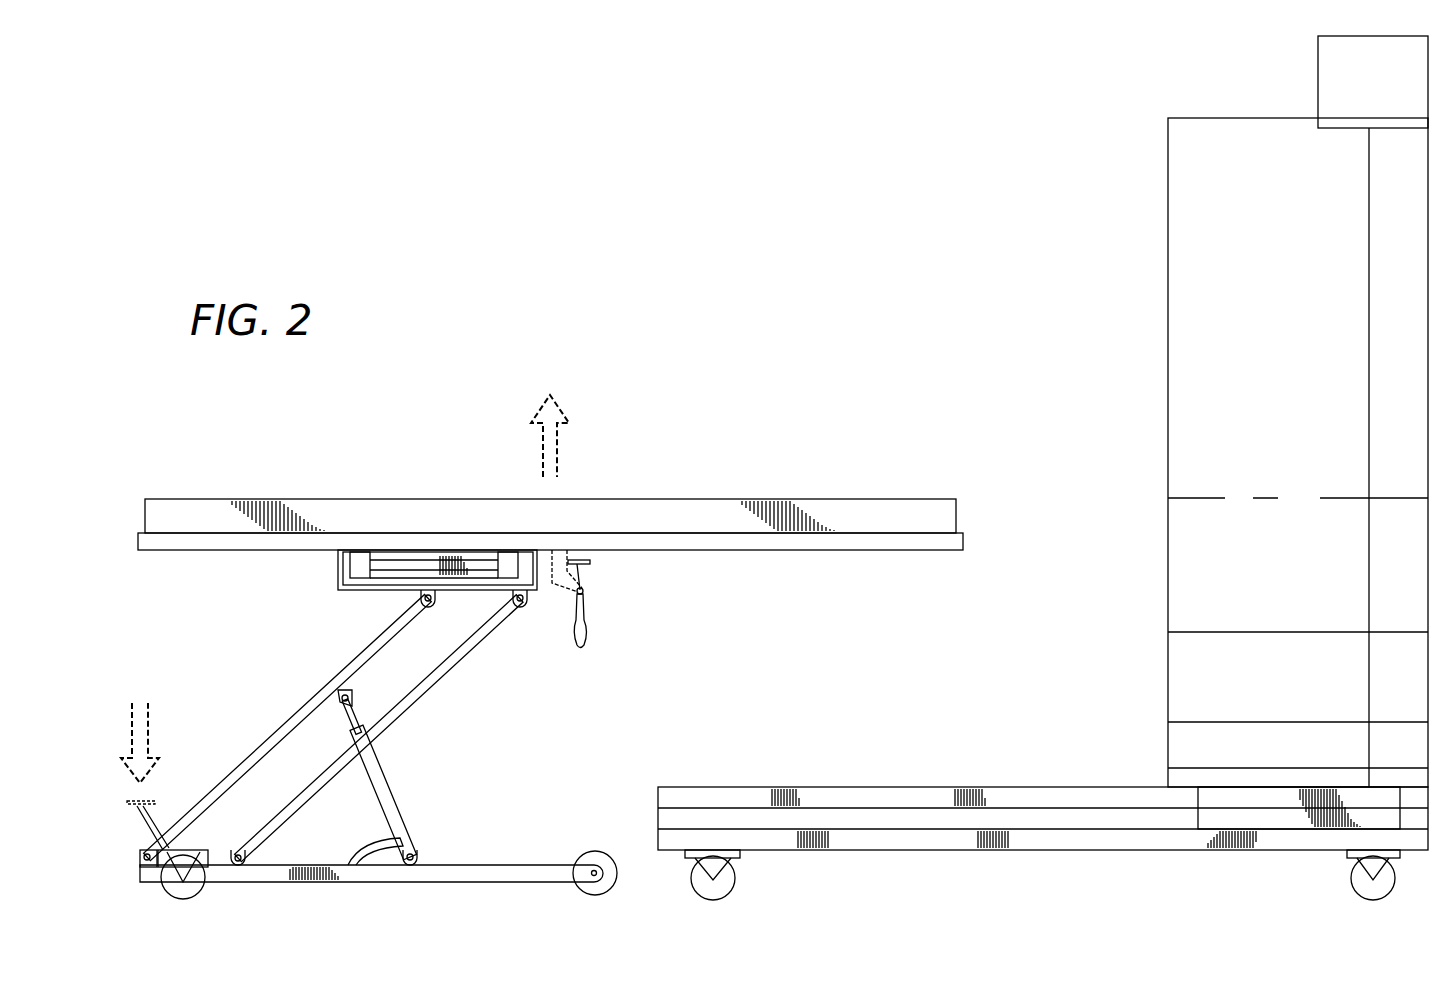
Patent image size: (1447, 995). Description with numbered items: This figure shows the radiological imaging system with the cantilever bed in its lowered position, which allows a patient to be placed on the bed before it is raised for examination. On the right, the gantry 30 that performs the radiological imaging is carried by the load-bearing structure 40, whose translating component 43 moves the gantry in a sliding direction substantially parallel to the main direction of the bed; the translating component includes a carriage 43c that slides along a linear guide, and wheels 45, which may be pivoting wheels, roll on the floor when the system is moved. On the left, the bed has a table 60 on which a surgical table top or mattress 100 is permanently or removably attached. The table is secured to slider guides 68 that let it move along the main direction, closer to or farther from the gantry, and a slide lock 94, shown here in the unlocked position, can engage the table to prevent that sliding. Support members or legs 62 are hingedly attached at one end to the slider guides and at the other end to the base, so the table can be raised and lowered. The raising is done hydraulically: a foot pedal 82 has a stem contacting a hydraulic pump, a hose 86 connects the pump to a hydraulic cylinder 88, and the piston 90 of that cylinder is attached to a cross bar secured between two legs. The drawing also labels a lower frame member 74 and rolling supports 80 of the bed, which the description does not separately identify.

The gantry 30 is at (1135, 253).
The load-bearing structure 40 is at (1070, 868).
The translating component 43 is at (928, 866).
The carriage 43c is at (1255, 815).
The wheels 45 is at (1393, 886).
The table 60 is at (138, 543).
The support member or leg 62 is at (379, 641).
The slider guides 68 is at (333, 569).
The base frame 74 is at (253, 870).
The casters 80 is at (175, 887).
The foot pedal 82 is at (131, 800).
The hose 86 is at (373, 848).
The hydraulic cylinder 88 is at (380, 773).
The piston 90 is at (356, 706).
The slide lock 94 is at (607, 598).
The surgical table top or mattress 100 is at (808, 499).